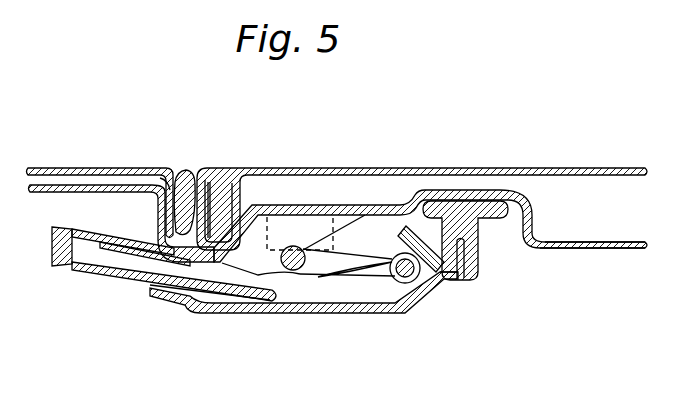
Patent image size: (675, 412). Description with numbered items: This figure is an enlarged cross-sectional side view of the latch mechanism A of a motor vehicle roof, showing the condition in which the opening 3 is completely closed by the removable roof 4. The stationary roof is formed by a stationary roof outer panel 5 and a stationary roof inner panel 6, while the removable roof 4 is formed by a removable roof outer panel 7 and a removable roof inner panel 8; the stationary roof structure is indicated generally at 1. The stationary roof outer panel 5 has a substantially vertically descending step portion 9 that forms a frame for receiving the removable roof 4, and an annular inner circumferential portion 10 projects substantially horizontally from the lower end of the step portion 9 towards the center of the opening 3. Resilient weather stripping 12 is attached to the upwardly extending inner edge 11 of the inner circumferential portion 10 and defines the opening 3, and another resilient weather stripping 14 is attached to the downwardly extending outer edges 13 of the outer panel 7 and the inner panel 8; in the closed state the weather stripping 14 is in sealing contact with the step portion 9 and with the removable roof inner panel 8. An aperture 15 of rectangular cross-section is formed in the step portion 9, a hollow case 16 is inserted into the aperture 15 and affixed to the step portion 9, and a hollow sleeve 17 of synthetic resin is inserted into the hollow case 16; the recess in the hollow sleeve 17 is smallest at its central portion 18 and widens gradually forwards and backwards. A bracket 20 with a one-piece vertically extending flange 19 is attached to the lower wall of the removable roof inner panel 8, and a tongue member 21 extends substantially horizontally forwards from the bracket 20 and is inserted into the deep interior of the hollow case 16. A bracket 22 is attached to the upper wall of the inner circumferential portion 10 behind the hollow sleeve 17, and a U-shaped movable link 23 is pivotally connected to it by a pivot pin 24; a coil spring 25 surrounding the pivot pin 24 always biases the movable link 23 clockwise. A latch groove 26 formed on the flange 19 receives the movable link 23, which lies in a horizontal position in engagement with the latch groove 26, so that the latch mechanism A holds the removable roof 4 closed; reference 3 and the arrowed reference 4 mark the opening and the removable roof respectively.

The door panel assembly 1 is at (118, 185).
The opening 3 is at (430, 225).
The removable roof 4 is at (422, 216).
The stationary roof outer panel 5 is at (97, 168).
The stationary roof inner panel 6 is at (54, 193).
The removable roof outer panel 7 is at (579, 168).
The removable roof inner panel 8 is at (580, 248).
The step portion 9 is at (167, 167).
The inner circumferential portion 10 is at (333, 315).
The inner edge 11 is at (465, 278).
The weather stripping 12 is at (467, 262).
The outer edges 13 is at (208, 168).
The weather stripping 14 is at (186, 170).
The aperture 15 is at (155, 281).
The hollow case 16 is at (62, 266).
The hollow sleeve 17 is at (174, 292).
The central portion 18 is at (150, 283).
The flange 19 is at (367, 212).
The bracket 20 is at (312, 203).
The tongue member 21 is at (108, 266).
The bracket 22 is at (376, 290).
The U-shaped movable link 23 is at (330, 268).
The pivot pin 24 is at (412, 290).
The coil spring 25 is at (410, 306).
The latch groove 26 is at (291, 287).
The latch mechanism A is at (304, 251).